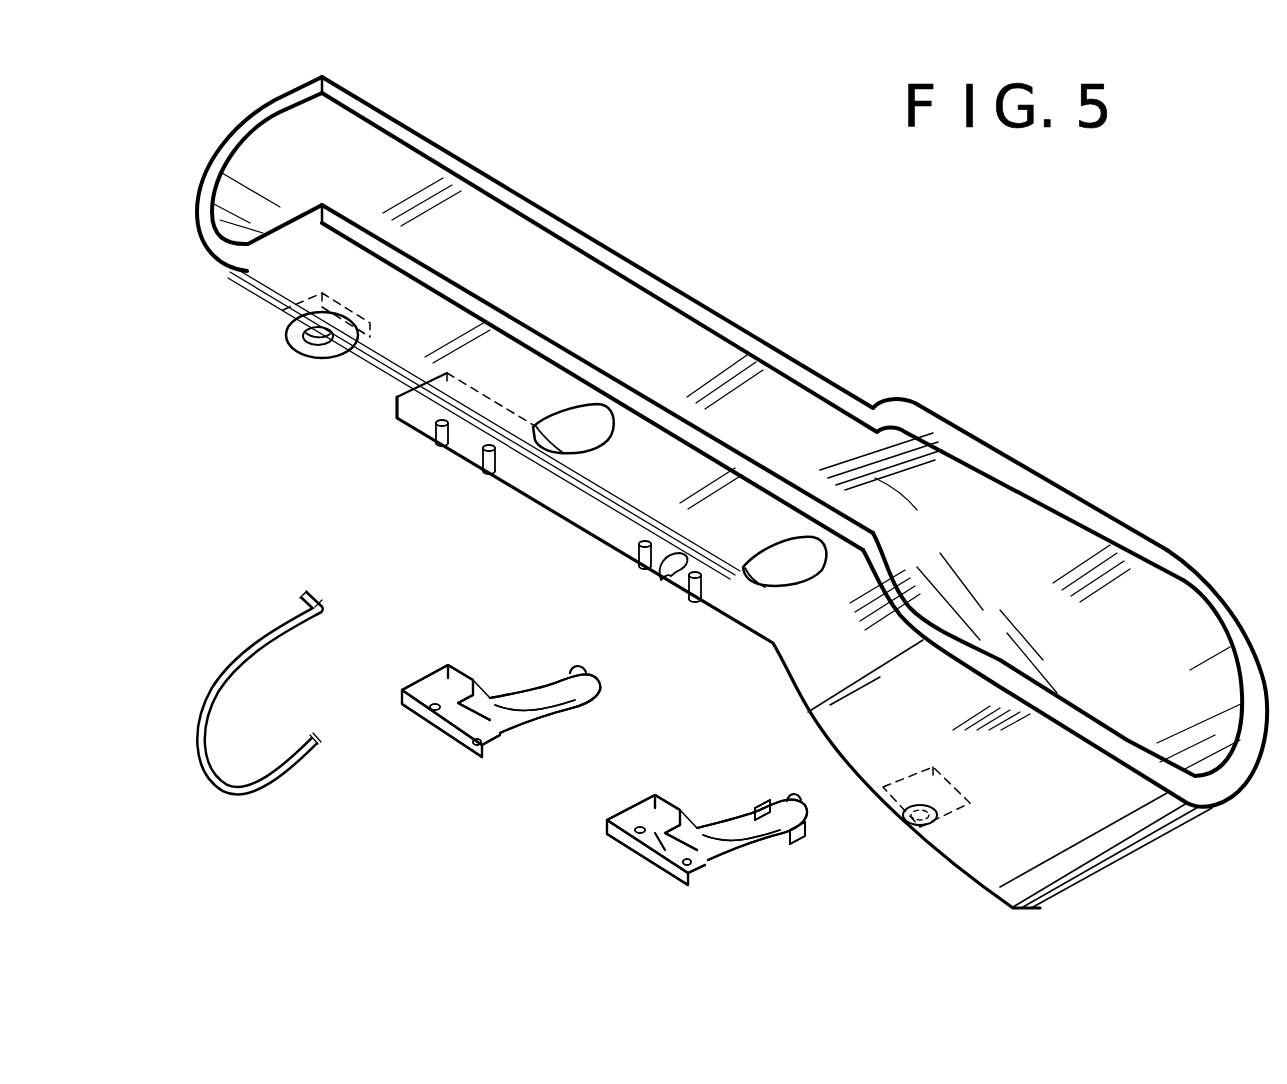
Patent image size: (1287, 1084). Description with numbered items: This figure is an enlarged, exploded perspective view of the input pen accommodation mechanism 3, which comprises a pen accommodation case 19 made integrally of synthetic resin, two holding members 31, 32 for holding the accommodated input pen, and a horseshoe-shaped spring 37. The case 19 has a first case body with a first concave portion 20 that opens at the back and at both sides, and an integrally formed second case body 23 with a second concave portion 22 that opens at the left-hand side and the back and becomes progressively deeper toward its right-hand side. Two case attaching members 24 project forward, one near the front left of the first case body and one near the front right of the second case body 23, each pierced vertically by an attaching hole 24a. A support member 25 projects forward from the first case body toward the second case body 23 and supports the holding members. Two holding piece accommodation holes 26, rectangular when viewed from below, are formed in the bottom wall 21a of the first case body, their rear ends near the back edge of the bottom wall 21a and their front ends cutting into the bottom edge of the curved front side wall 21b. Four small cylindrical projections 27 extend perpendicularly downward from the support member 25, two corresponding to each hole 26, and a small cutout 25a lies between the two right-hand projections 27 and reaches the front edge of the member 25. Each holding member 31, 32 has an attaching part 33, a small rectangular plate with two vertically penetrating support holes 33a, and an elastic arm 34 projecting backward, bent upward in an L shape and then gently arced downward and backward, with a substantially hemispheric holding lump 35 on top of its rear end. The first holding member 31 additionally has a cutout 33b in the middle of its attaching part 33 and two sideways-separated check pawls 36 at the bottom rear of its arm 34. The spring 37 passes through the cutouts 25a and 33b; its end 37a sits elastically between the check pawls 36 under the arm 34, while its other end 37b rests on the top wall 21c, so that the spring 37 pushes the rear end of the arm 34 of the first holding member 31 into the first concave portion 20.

The input pen accommodation mechanism 3 is at (941, 337).
The pen accommodation case 19 is at (797, 361).
The first concave portion 20 is at (677, 343).
The bottom wall 21a is at (406, 333).
The curved front side wall 21b is at (197, 228).
The top wall 21c is at (603, 243).
The second concave portion 22 is at (1030, 540).
The second case body 23 is at (1103, 508).
The case attaching member 24 is at (289, 346).
The attaching hole 24a is at (323, 343).
The support member 25 is at (562, 512).
The cutout 25a is at (666, 580).
The holding piece accommodation hole 26 is at (597, 444).
The cylindrical projection 27 is at (442, 450).
The first holding member 31 is at (675, 802).
The holding member 32 is at (467, 673).
The attaching part 33 is at (420, 688).
The support hole 33a is at (432, 713).
The cutout 33b is at (650, 860).
The elastic arm 34 is at (560, 724).
The holding lump 35 is at (583, 663).
The check pawl 36 is at (755, 808).
The horseshoe-shaped spring 37 is at (227, 653).
The spring end 37a is at (307, 755).
The spring end 37b is at (308, 623).